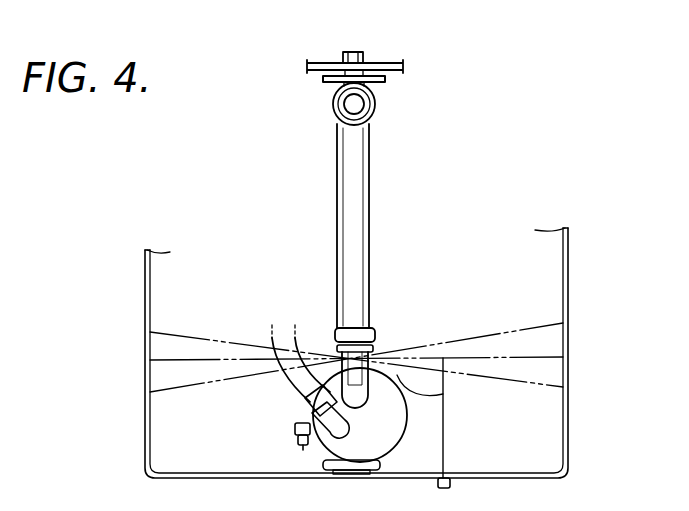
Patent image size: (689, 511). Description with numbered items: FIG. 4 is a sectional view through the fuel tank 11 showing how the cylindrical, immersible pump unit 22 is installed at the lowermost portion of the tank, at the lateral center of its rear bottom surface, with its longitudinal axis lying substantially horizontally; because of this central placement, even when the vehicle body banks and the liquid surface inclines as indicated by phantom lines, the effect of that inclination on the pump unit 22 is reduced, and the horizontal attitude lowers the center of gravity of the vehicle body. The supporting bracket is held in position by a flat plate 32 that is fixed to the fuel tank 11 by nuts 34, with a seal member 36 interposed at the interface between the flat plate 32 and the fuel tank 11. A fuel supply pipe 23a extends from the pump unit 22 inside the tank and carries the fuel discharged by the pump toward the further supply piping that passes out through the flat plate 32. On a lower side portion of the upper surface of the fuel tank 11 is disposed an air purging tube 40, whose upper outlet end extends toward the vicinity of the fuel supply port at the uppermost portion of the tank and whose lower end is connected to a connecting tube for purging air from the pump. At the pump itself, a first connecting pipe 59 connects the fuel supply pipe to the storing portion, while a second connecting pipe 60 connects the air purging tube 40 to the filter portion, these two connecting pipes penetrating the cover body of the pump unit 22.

The fuel tank 11 is at (568, 302).
The pump unit 22 is at (395, 368).
The fuel supply pipe 23a is at (288, 376).
The flat plate 32 is at (390, 62).
The nut 34 is at (353, 53).
The seal member 36 is at (387, 79).
The air purging tube 40 is at (370, 219).
The first connecting pipe 59 is at (312, 448).
The second connecting pipe 60 is at (443, 394).